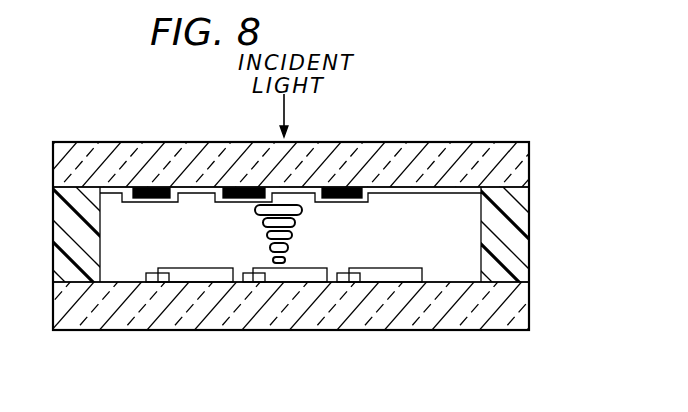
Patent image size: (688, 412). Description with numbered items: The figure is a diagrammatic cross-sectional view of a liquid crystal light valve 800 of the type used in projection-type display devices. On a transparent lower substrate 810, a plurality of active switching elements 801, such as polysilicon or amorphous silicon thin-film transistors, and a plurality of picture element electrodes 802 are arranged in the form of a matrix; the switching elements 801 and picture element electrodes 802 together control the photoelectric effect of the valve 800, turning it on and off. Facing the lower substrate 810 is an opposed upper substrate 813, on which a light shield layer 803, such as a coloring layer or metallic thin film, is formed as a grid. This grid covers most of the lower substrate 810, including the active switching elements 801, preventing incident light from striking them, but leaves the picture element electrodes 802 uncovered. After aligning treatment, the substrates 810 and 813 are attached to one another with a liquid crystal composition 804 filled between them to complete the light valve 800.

The liquid crystal light valve 800 is at (97, 333).
The active switching element 801 is at (160, 283).
The picture element electrode 802 is at (212, 270).
The light shield layer 803 is at (238, 190).
The liquid crystal composition 804 is at (296, 207).
The transparent substrate 810 is at (475, 318).
The opposed upper substrate 813 is at (530, 157).